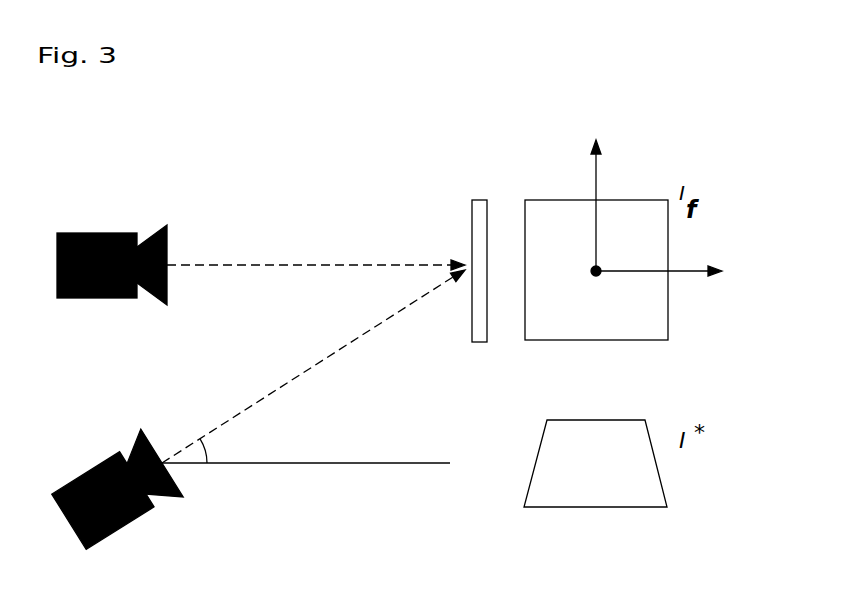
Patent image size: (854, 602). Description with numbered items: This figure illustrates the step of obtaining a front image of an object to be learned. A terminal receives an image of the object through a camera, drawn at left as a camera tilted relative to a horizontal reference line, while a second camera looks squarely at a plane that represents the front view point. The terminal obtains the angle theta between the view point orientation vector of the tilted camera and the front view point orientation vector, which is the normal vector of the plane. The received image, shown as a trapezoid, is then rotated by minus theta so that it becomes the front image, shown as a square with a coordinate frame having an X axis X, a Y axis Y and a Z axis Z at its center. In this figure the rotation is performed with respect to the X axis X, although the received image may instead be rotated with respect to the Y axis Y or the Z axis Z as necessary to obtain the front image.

The X axis X is at (668, 274).
The Y axis Y is at (595, 192).
The Z axis Z is at (582, 280).